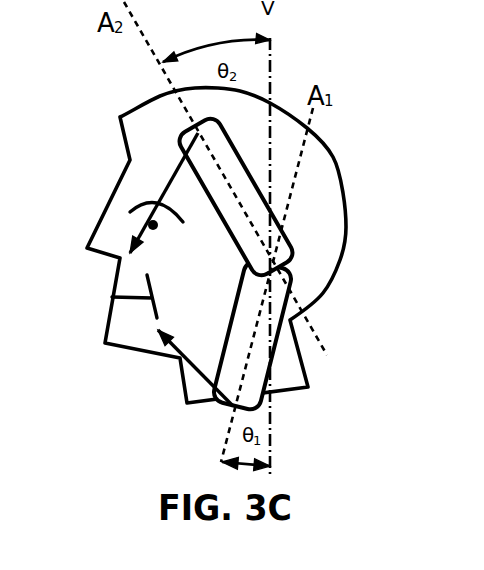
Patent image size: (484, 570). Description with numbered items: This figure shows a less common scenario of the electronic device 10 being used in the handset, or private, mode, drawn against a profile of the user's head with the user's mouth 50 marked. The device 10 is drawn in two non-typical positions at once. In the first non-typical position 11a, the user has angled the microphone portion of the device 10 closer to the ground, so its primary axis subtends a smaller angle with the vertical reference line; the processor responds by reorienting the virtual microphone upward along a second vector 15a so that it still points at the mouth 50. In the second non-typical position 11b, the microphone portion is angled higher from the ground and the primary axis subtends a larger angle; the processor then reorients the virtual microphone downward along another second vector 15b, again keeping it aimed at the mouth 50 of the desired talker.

The electronic device 10 is at (293, 255).
The first non-typical position 11a is at (225, 348).
The second non-typical position 11b is at (212, 197).
The second vector 15a is at (190, 372).
The second vector 15b is at (170, 175).
The mouth 50 is at (110, 295).